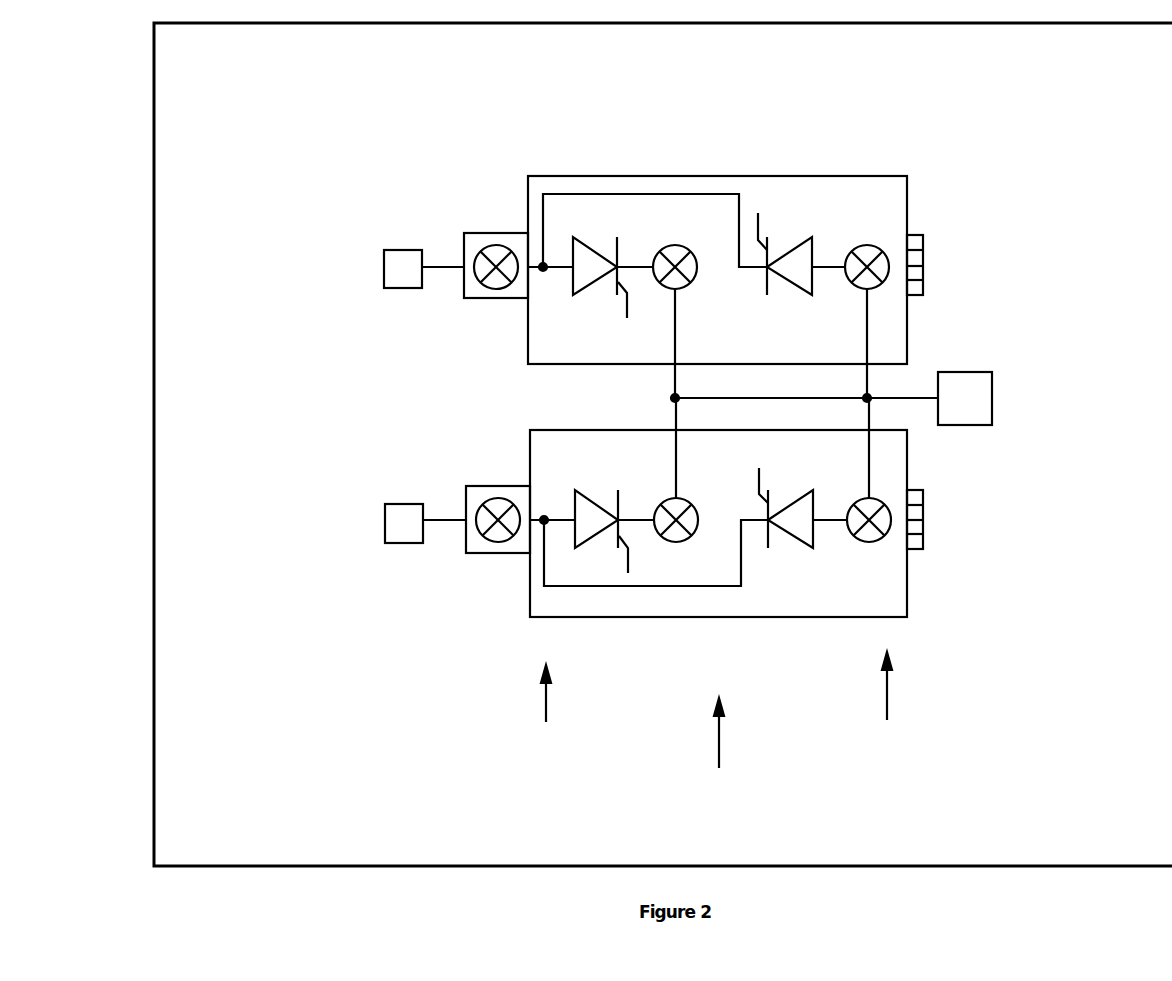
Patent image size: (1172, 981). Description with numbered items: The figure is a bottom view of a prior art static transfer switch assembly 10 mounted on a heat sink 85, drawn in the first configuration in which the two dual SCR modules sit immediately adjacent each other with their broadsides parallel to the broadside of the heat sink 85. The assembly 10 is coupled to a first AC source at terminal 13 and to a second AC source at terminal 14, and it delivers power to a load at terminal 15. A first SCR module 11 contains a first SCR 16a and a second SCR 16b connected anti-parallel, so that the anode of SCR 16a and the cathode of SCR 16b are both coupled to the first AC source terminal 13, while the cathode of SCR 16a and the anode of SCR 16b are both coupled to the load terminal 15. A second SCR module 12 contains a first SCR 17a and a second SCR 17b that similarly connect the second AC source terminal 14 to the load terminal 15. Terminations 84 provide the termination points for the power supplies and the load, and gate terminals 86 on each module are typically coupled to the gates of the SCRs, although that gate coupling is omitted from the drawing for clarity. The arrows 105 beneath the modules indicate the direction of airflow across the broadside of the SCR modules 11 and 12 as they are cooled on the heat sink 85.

The static transfer switch assembly 10 is at (943, 113).
The first SCR module 11 is at (907, 176).
The second SCR module 12 is at (530, 430).
The first AC source terminal 13 is at (384, 266).
The second AC source terminal 14 is at (385, 525).
The load terminal 15 is at (992, 390).
The first SCR 16a is at (584, 287).
The second SCR 16b is at (808, 239).
The first SCR 17a is at (602, 488).
The second SCR 17b is at (793, 538).
The terminations 84 is at (503, 247).
The heat sink 85 is at (292, 800).
The gate terminals 86 is at (925, 258).
The arrows 105 is at (549, 702).